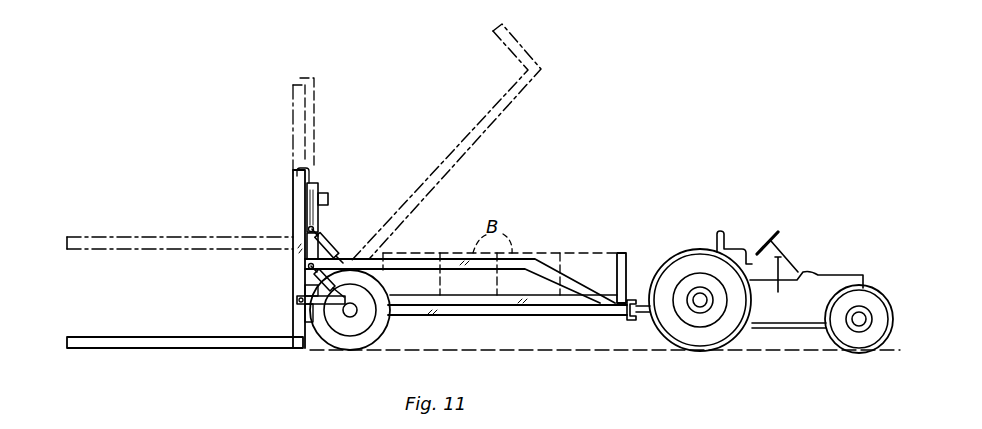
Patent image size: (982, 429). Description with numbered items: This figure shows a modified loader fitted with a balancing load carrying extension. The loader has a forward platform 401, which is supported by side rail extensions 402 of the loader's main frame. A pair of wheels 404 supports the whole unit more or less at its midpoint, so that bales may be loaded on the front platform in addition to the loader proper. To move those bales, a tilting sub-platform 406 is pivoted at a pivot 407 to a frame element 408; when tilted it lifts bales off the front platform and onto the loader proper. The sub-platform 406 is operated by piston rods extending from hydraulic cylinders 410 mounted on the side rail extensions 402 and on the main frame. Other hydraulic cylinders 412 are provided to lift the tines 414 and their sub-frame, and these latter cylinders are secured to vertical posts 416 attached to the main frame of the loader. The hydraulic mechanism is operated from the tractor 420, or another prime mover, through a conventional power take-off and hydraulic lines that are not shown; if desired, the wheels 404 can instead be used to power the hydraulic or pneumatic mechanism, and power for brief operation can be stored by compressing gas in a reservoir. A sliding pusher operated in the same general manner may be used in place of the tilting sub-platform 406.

The forward platform 401 is at (543, 303).
The side rail extensions 402 is at (518, 266).
The wheels 404 is at (389, 320).
The tilting sub-platform 406 is at (500, 112).
The pivot 407 is at (300, 296).
The frame element 408 is at (384, 254).
The hydraulic cylinders 410 is at (334, 240).
The hydraulic cylinders 412 is at (317, 187).
The tines 414 is at (130, 342).
The vertical posts 416 is at (292, 195).
The tractor 420 is at (822, 272).